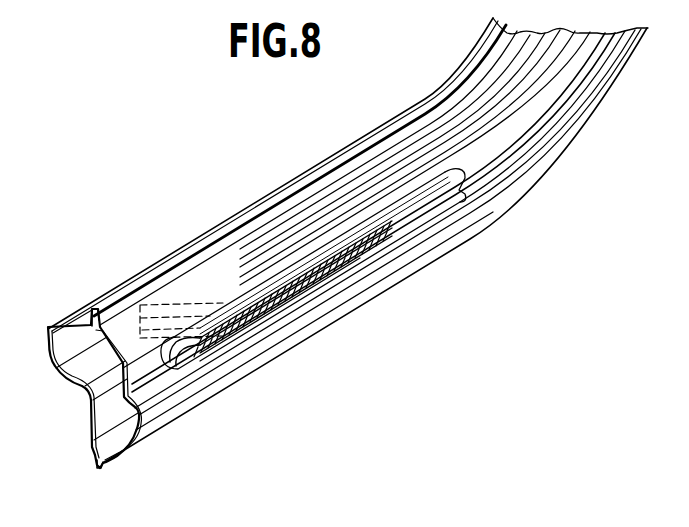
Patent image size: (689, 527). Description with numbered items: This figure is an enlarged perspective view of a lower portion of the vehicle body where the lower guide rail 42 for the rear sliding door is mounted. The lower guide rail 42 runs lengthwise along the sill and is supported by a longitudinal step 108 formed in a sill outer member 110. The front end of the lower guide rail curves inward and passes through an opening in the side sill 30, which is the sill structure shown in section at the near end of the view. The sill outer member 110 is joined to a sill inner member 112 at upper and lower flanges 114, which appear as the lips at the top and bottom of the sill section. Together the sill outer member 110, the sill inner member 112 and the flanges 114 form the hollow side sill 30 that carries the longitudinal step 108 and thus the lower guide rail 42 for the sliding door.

The side sill 30 is at (347, 304).
The lower guide rail 42 is at (379, 266).
The longitudinal step 108 is at (220, 358).
The sill outer member 110 is at (140, 418).
The sill inner member 112 is at (70, 373).
The upper and lower flanges 114 is at (98, 310).